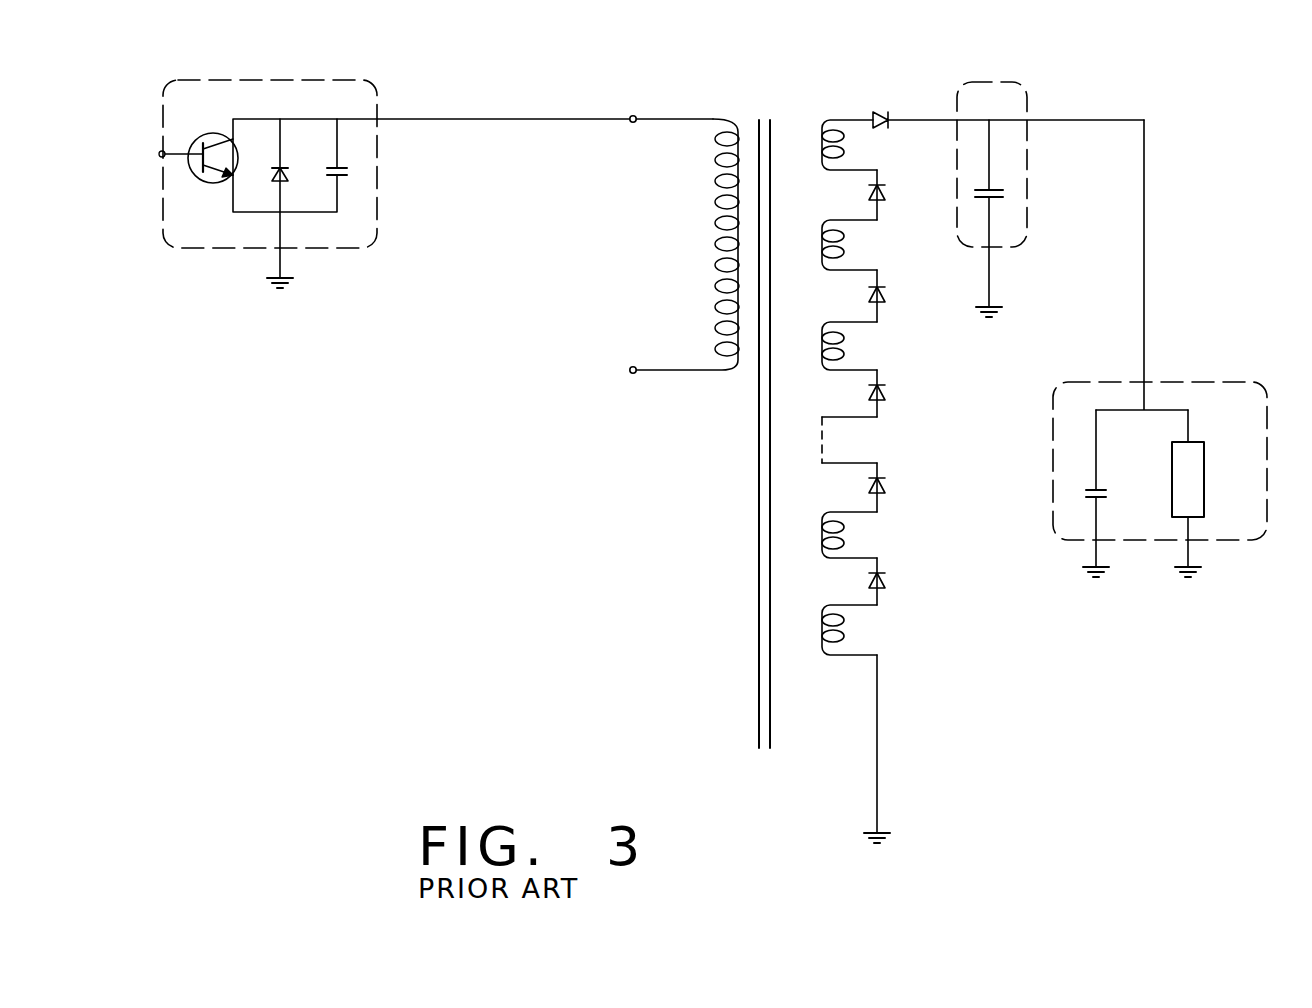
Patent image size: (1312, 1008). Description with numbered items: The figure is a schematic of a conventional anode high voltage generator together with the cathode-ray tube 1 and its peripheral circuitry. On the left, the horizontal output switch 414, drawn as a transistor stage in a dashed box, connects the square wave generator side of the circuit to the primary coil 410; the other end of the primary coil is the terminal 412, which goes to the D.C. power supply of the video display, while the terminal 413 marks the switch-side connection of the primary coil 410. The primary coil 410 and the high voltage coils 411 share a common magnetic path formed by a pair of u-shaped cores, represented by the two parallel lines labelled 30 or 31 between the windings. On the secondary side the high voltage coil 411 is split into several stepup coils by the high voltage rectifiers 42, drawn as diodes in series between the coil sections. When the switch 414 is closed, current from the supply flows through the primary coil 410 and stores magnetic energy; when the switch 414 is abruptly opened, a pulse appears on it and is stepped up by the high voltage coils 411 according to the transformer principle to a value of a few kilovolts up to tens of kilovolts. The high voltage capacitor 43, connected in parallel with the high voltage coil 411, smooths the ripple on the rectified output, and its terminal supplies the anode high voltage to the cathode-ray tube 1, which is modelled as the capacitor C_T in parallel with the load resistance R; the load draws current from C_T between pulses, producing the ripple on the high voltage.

The cathode-ray tube 1 is at (1228, 384).
The transformer core 30 is at (682, 435).
The transformer core 31 is at (757, 733).
The high voltage rectifier 42 is at (893, 487).
The high voltage capacitor 43 is at (1027, 200).
The primary coil 410 is at (713, 117).
The high voltage coil 411 is at (828, 118).
The terminal 412 is at (630, 369).
The primary winding terminal 413 is at (630, 116).
The horizontal output switch 414 is at (370, 82).